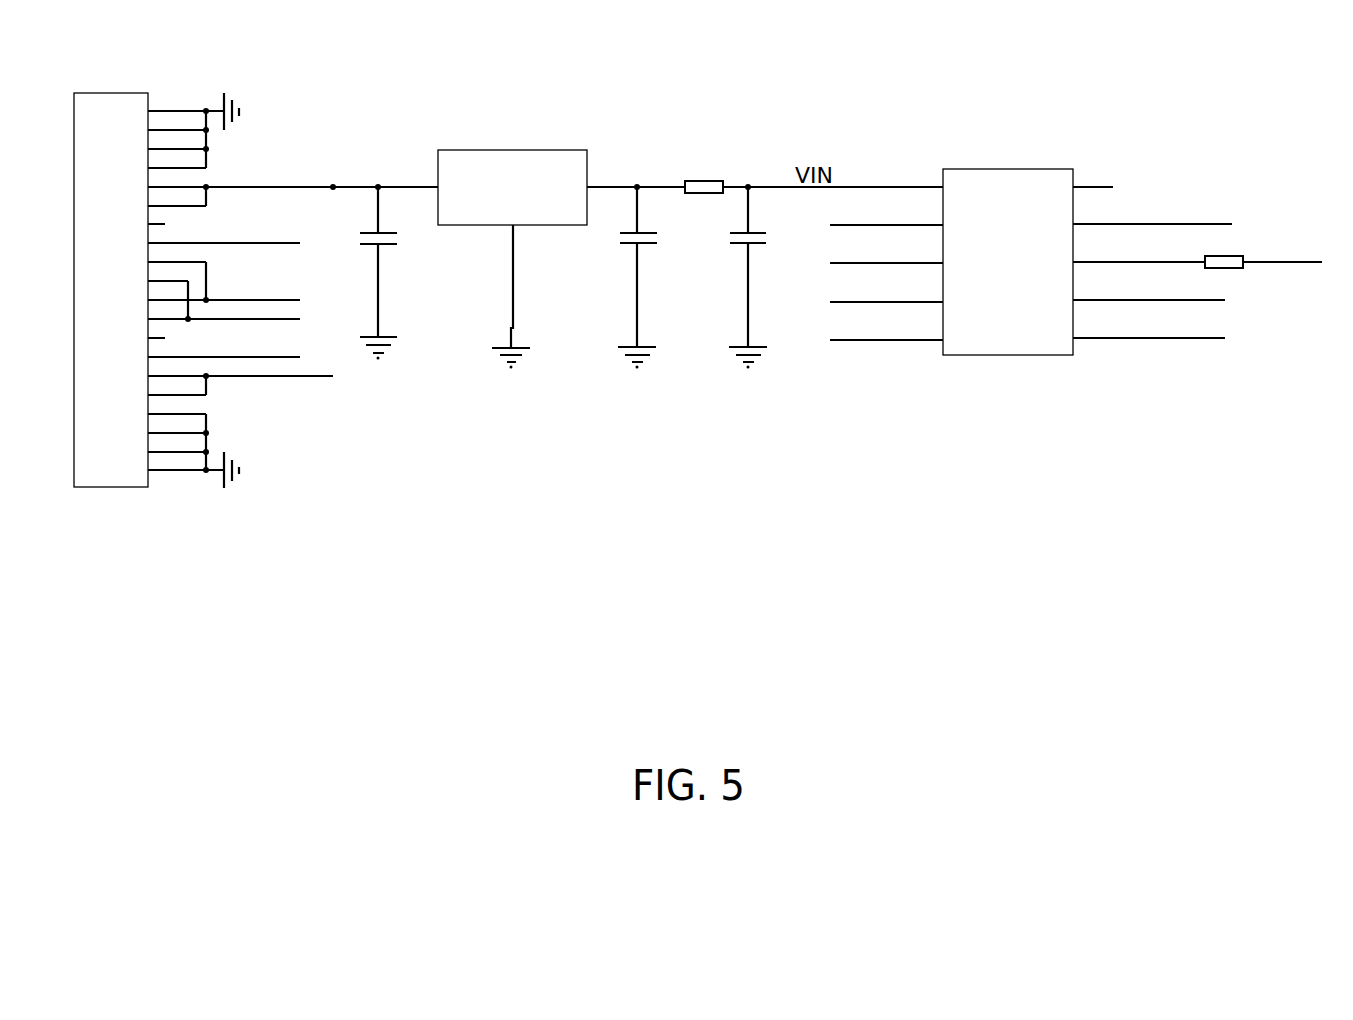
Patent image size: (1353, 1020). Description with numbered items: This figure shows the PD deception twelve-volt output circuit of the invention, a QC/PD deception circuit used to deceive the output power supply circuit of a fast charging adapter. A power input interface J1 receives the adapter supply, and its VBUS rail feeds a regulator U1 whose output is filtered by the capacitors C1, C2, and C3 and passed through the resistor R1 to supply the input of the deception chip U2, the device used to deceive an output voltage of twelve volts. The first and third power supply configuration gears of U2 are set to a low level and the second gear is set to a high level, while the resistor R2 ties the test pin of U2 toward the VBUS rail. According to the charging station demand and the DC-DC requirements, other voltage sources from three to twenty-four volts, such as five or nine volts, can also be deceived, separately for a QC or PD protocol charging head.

The USB Type-C connector J1 is at (235, 277).
The voltage regulator 7550 U1 is at (483, 258).
The controller chip XP06 U2 is at (1031, 270).
The capacitor 106/NC C1 is at (403, 283).
The capacitor 106/NC C2 is at (608, 287).
The capacitor 105/25V C3 is at (717, 287).
The resistor 510K R1 is at (790, 187).
The resistor 10K R2 is at (1266, 261).